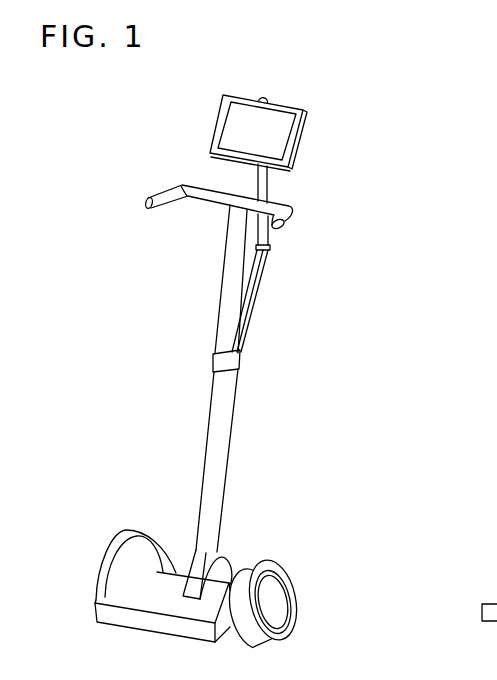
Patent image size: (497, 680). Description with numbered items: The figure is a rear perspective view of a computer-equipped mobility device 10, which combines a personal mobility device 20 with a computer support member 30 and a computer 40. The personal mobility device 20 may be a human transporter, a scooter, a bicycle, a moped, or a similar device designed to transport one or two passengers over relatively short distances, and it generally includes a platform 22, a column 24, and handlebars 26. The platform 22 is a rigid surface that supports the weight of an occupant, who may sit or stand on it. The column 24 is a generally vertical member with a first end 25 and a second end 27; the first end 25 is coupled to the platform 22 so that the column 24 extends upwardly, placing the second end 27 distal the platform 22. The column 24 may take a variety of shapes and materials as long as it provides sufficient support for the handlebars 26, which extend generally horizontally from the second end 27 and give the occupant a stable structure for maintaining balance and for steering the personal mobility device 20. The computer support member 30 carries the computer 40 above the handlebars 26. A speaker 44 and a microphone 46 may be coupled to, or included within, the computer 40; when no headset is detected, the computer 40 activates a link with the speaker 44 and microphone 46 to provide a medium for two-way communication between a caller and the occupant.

The computer-equipped mobility device 10 is at (335, 168).
The personal mobility device 20 is at (237, 460).
The platform 22 is at (167, 592).
The column 24 is at (224, 423).
The first end 25 is at (218, 567).
The handlebars 26 is at (195, 198).
The second end 27 is at (229, 296).
The computer support member 30 is at (263, 299).
The computer 40 is at (293, 137).
The speaker 44 is at (286, 168).
The microphone 46 is at (260, 99).